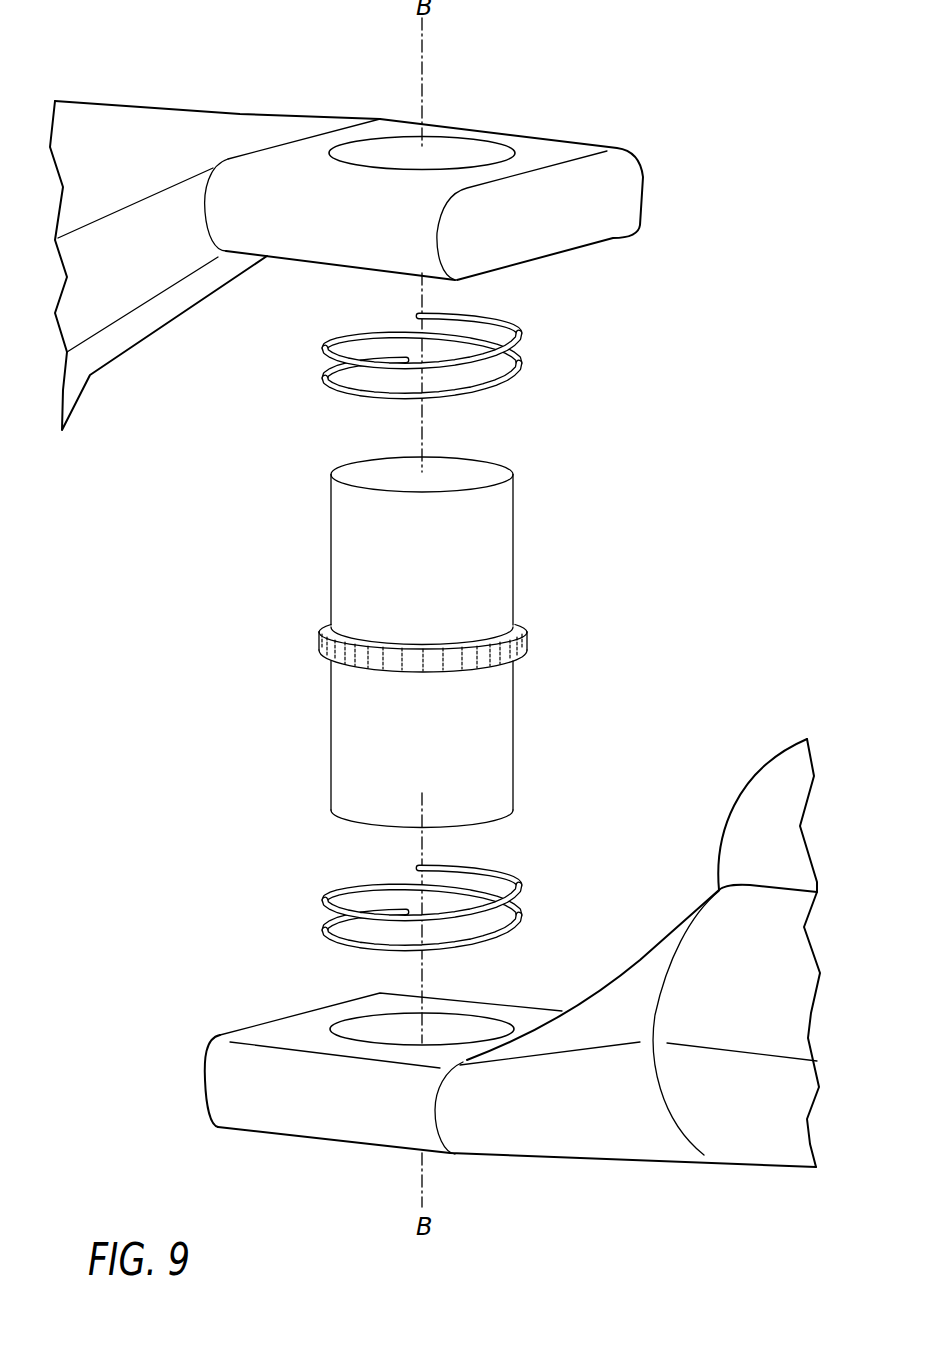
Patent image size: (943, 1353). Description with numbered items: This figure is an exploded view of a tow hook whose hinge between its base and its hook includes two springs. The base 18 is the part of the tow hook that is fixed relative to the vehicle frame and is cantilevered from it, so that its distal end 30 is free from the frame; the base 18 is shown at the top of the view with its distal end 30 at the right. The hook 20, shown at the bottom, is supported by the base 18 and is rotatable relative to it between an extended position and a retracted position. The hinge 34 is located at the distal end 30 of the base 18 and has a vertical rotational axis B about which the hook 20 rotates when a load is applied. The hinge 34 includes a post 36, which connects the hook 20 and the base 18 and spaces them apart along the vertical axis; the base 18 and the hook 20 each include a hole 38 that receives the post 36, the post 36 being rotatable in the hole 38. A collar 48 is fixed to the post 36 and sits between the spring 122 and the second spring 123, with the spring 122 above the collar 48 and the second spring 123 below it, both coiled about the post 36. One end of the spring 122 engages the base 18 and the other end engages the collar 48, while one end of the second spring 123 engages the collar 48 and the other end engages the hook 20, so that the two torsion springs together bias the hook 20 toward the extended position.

The base 18 is at (135, 127).
The hook 20 is at (755, 1142).
The distal end 30 is at (437, 175).
The hinge 34 is at (563, 48).
The post 36 is at (353, 473).
The hole 38 is at (330, 163).
The collar 48 is at (528, 640).
The spring 122 is at (524, 362).
The second spring 123 is at (318, 903).